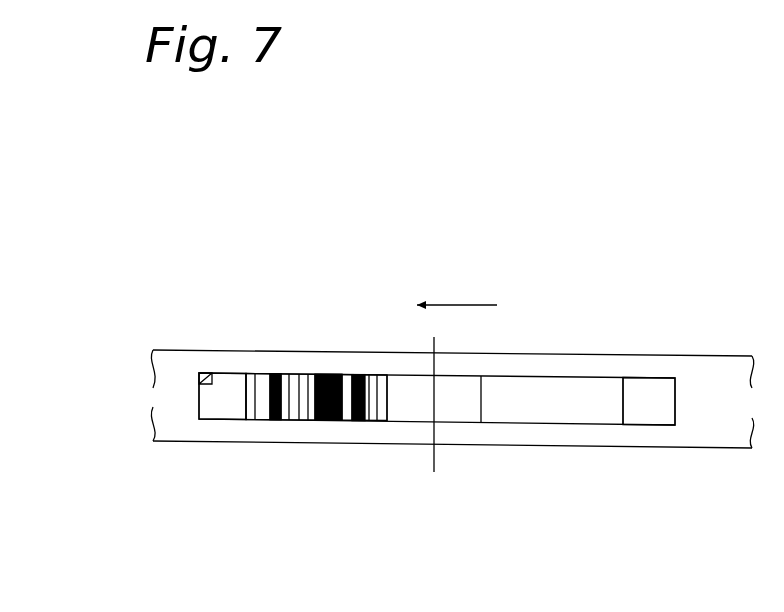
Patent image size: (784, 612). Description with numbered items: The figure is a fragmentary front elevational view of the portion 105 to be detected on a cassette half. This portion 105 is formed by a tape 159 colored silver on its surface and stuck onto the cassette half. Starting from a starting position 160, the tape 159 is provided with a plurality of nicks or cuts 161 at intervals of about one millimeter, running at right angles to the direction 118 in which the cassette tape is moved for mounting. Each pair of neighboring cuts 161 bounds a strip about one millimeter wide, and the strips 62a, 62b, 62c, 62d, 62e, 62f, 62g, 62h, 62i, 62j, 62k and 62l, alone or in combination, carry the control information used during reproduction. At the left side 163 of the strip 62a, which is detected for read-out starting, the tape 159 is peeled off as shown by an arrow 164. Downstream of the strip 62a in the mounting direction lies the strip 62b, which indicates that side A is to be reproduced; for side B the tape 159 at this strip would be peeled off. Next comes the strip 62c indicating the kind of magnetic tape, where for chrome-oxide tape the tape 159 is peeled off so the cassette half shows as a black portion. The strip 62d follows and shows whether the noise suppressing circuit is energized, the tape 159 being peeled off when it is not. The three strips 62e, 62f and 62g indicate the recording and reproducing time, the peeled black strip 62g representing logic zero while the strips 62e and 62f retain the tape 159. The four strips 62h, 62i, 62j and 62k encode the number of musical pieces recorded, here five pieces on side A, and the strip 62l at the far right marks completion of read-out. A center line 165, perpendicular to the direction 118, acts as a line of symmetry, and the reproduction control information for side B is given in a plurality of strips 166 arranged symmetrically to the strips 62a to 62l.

The portion to be detected 105 is at (506, 376).
The direction for movement to mount the cassette tape 118 is at (466, 303).
The tape 159 is at (657, 388).
The starting position 160 is at (244, 373).
The nicks or cuts 161 is at (380, 374).
The left side of the strip 62a 163 is at (210, 419).
The arrow 164 is at (223, 400).
The center line 165 is at (435, 453).
The strips 166 is at (596, 388).
The strip for read-out starting 62a is at (251, 419).
The strip for indicating the side A 62b is at (260, 420).
The strip for indicating the kind of the magnetic tape 62c is at (265, 420).
The strip for showing the state of energization of the noise suppressing circuit 62d is at (274, 420).
The strip for indicating the recording and reproducing time 62e is at (284, 420).
The strip for indicating the recording and reproducing time 62f is at (302, 420).
The strip for indicating the recording and reproducing time 62g is at (320, 420).
The strip for indicating the number of musical pieces 62h is at (334, 420).
The strip for indicating the number of musical pieces 62i is at (346, 420).
The strip for indicating the number of musical pieces 62j is at (364, 421).
The strip for indicating the number of musical pieces 62k is at (377, 421).
The strip for completion of read-out 62l is at (388, 421).